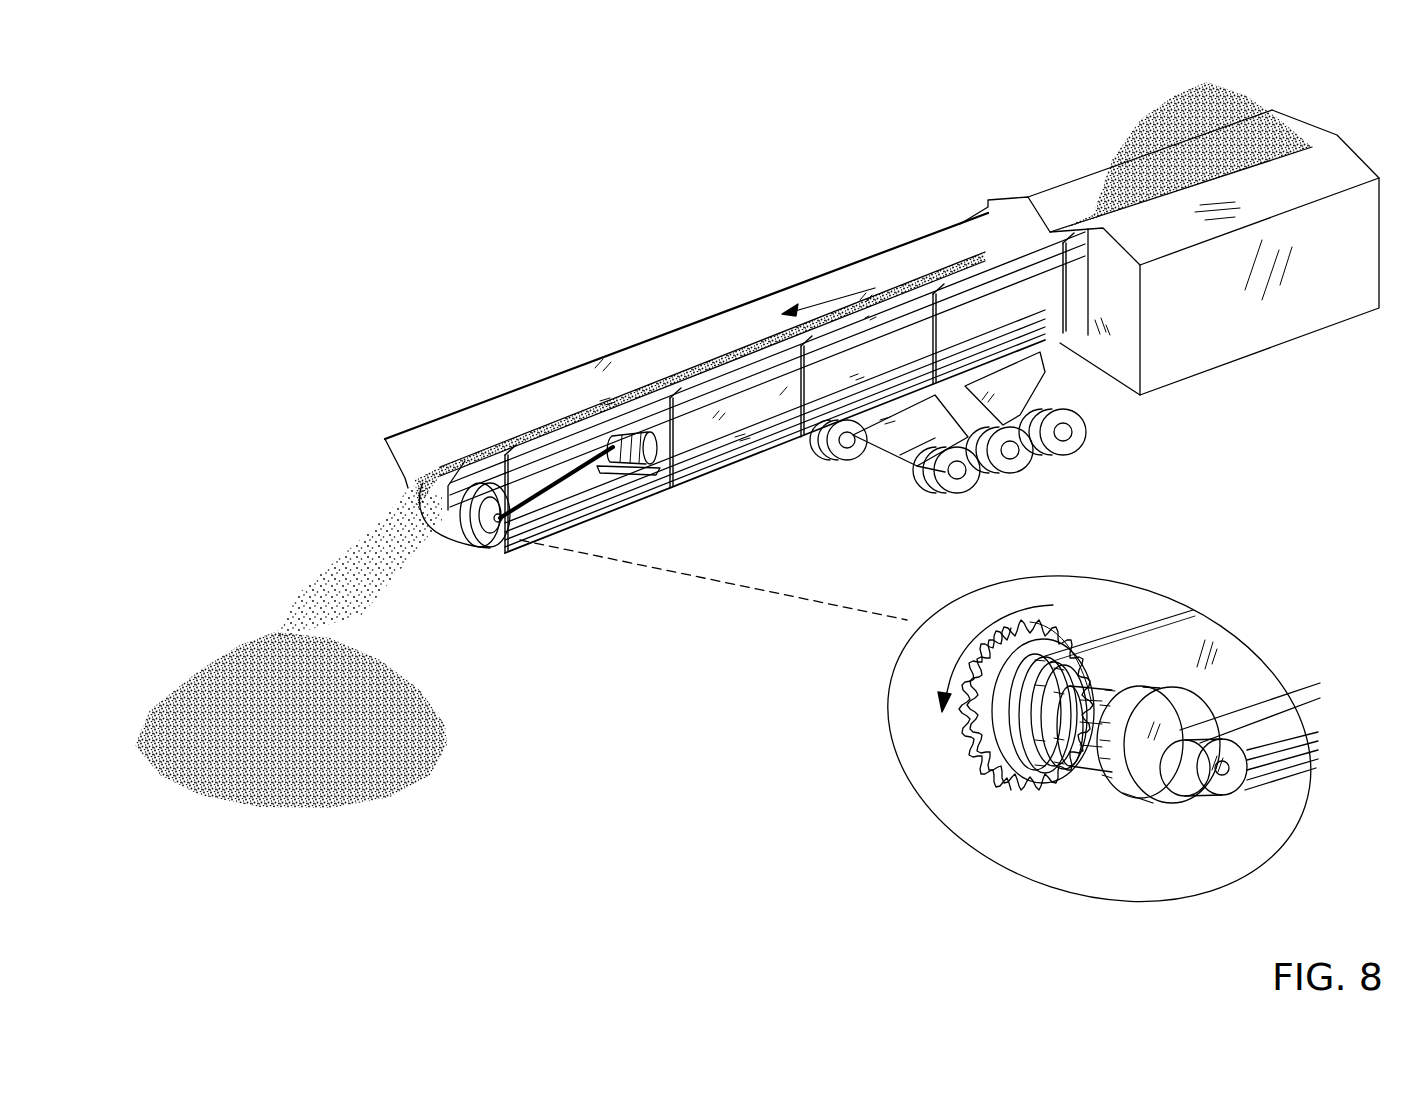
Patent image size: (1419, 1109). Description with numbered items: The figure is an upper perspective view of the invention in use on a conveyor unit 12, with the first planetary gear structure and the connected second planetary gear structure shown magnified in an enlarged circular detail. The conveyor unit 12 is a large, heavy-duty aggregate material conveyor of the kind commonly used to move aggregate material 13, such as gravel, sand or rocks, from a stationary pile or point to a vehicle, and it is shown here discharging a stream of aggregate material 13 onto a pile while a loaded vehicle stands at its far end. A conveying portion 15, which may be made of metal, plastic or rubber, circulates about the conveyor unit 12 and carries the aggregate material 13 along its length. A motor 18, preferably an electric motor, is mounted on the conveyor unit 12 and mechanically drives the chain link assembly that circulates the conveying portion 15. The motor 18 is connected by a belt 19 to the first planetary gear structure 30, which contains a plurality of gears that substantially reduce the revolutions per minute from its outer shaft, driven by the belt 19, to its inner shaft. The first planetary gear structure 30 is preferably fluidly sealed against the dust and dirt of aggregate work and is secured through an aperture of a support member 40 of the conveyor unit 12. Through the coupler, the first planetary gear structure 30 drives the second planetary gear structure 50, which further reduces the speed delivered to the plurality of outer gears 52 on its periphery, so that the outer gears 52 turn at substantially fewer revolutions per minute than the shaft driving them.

The conveyor unit 12 is at (788, 247).
The aggregate material 13 is at (397, 713).
The conveying portion 15 is at (457, 517).
The motor 18 is at (667, 458).
The belt 19 is at (557, 473).
The first planetary gear structure 30 is at (1180, 797).
The support member 40 is at (1237, 655).
The second planetary gear structure 50 is at (972, 730).
The outer gears 52 is at (1068, 622).